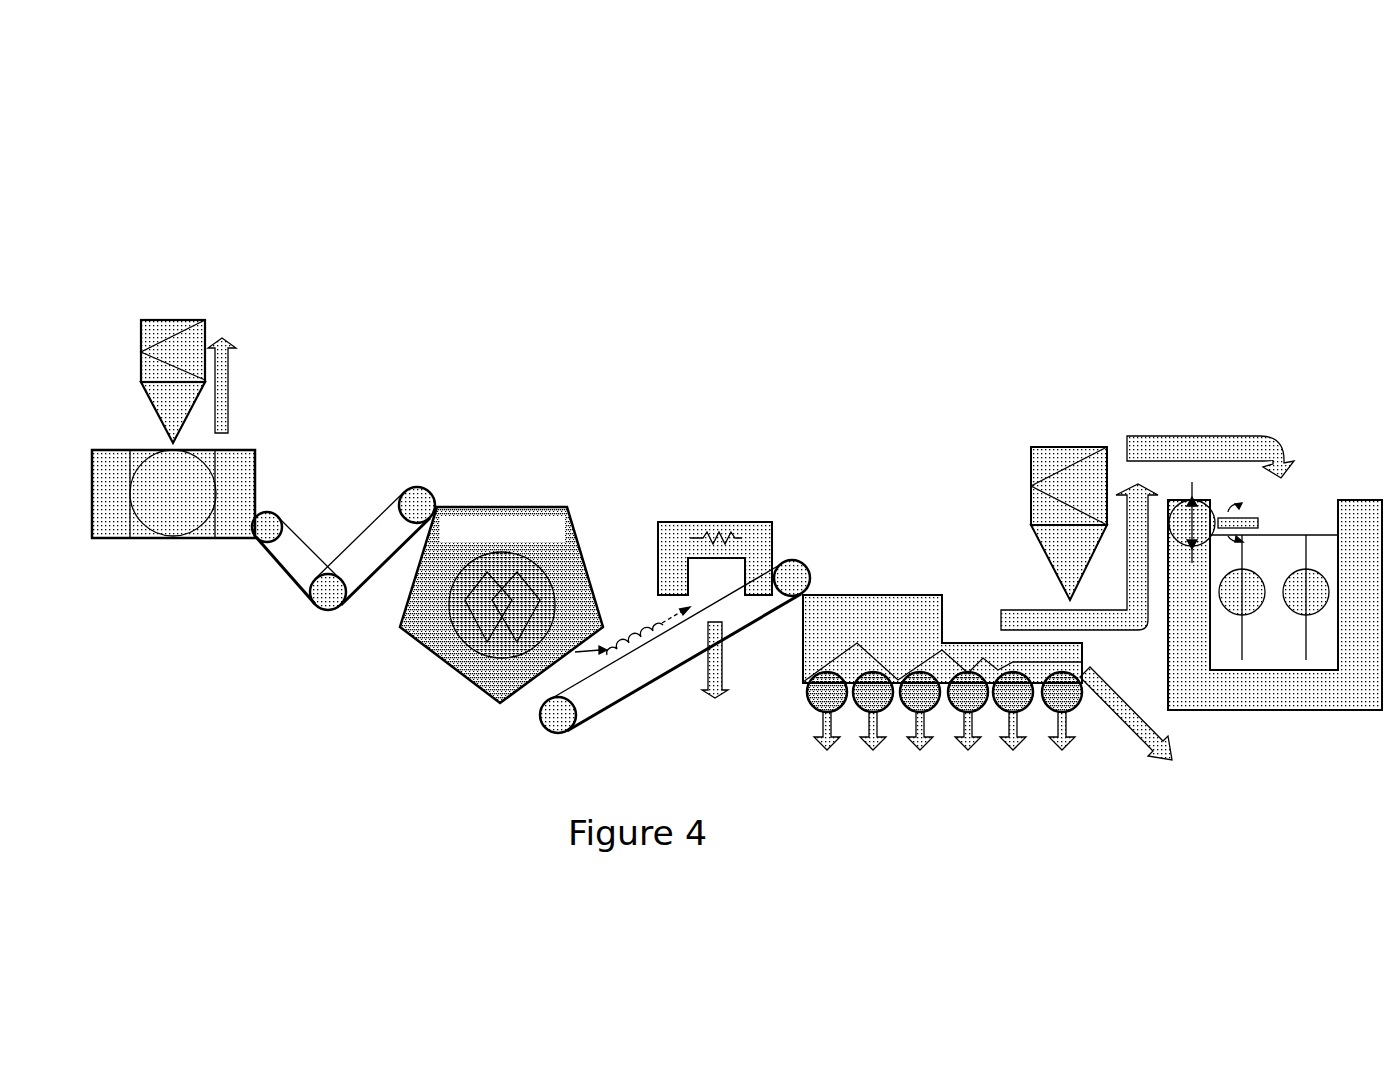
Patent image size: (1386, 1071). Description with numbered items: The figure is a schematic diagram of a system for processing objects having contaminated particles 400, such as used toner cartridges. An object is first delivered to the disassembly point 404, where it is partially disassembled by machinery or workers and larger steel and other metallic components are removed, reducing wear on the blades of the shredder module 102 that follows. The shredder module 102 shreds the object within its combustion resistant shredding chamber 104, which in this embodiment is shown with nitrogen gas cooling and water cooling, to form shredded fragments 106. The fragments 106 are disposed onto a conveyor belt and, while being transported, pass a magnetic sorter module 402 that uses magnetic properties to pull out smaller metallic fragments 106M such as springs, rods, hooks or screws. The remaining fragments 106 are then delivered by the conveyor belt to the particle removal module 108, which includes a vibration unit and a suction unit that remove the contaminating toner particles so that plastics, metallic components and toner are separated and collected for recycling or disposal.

The system for processing objects having contaminated particles 400 is at (722, 325).
The disassembly point 404 is at (172, 552).
The shredder module 102 is at (575, 506).
The shredding chamber 104 is at (470, 655).
The shredded fragments 106 is at (617, 658).
The metallic fragments 106M is at (711, 701).
The magnetic sorter module 402 is at (752, 520).
The particle removal module 108 is at (1362, 383).